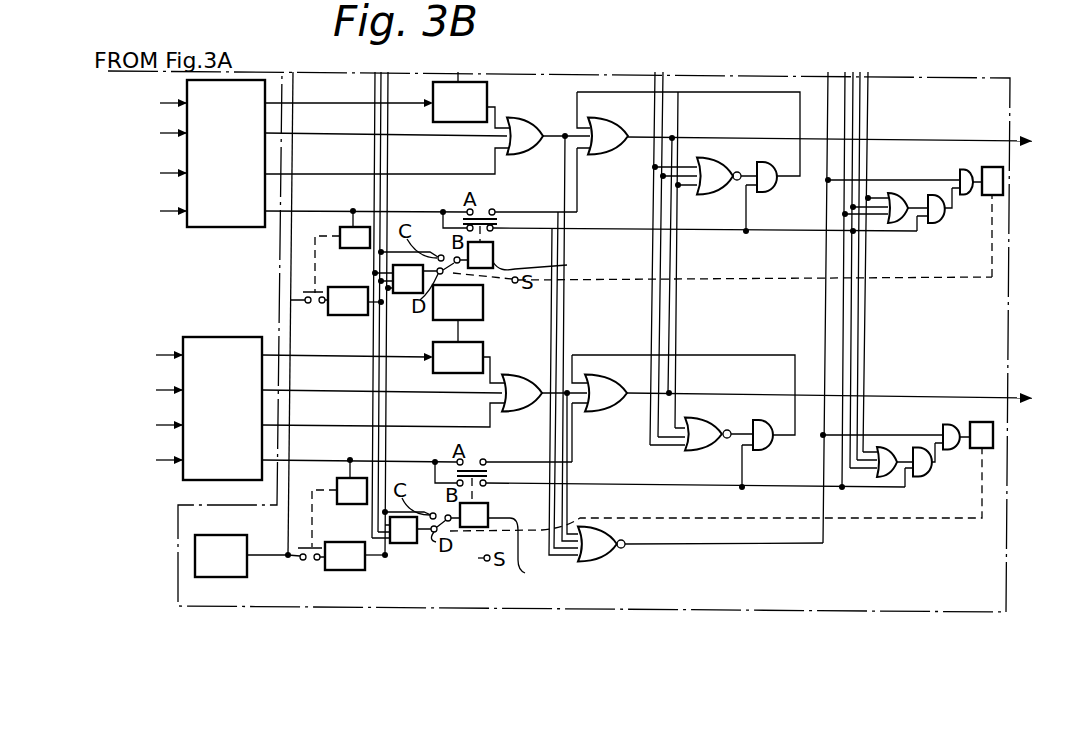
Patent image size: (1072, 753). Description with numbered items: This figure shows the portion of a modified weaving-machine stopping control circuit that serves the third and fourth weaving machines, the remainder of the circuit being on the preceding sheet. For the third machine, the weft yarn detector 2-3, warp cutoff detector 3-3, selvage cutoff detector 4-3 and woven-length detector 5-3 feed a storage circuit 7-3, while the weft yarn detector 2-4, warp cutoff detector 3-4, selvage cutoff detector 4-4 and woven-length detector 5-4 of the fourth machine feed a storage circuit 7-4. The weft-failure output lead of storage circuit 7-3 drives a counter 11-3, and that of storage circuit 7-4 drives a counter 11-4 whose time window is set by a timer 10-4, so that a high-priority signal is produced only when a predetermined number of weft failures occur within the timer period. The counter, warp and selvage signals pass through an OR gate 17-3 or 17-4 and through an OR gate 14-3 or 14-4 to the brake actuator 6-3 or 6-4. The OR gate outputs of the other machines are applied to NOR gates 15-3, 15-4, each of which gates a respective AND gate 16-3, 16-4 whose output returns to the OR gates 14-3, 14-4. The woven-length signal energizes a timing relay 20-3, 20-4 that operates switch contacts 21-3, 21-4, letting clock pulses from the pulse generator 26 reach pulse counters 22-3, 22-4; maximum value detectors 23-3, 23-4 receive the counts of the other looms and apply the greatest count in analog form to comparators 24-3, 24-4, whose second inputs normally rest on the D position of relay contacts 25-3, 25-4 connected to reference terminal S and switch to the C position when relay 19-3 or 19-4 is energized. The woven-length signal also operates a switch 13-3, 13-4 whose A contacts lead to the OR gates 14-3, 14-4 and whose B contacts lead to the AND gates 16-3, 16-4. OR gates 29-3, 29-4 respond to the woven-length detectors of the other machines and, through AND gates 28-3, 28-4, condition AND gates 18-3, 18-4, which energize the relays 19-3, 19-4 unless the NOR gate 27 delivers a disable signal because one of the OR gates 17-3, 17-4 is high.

The weft yarn detector 2-3 is at (151, 101).
The warp cutoff detector 3-3 is at (151, 134).
The selvage cutoff detector 4-3 is at (151, 174).
The woven-length detector 5-3 is at (151, 211).
The storage circuit 7-3 is at (348, 153).
The counter 11-3 is at (490, 85).
The OR gate 17-3 is at (525, 118).
The OR gate 14-3 is at (610, 157).
The brake actuator 6-3 is at (830, 130).
The NOR gate 15-3 is at (715, 196).
The AND gate 16-3 is at (770, 193).
The AND gate 18-3 is at (960, 176).
The relay 19-3 is at (1000, 167).
The AND gate 28-3 is at (935, 223).
The OR gate 29-3 is at (895, 224).
The relay contacts 25-3 is at (455, 256).
The switch 13-3 is at (493, 248).
The comparator 24-3 is at (557, 262).
The timing relay 20-3 is at (355, 249).
The switch contacts 21-3 is at (312, 313).
The pulse counter 22-3 is at (350, 316).
The maximum value detector 23-3 is at (400, 294).
The timer 10-4 is at (483, 302).
The counter 11-4 is at (484, 347).
The weft yarn detector 2-4 is at (144, 354).
The warp cutoff detector 3-4 is at (144, 390).
The selvage cutoff detector 4-4 is at (144, 427).
The woven-length detector 5-4 is at (144, 462).
The storage circuit 7-4 is at (343, 408).
The OR gate 17-4 is at (524, 378).
The OR gate 14-4 is at (607, 414).
The brake actuator 6-4 is at (829, 387).
The NOR gate 15-4 is at (700, 452).
The AND gate 16-4 is at (766, 451).
The AND gate 18-4 is at (951, 426).
The relay 19-4 is at (993, 435).
The AND gate 28-4 is at (925, 478).
The OR gate 29-4 is at (887, 478).
The relay contacts 25-4 is at (438, 522).
The switch 13-4 is at (488, 507).
The comparator 24-4 is at (532, 557).
The timing relay 20-4 is at (352, 505).
The switch contacts 21-4 is at (301, 566).
The pulse counter 22-4 is at (345, 571).
The maximum value detector 23-4 is at (403, 544).
The NOR gate 27 is at (700, 544).
The pulse generator 26 is at (210, 578).